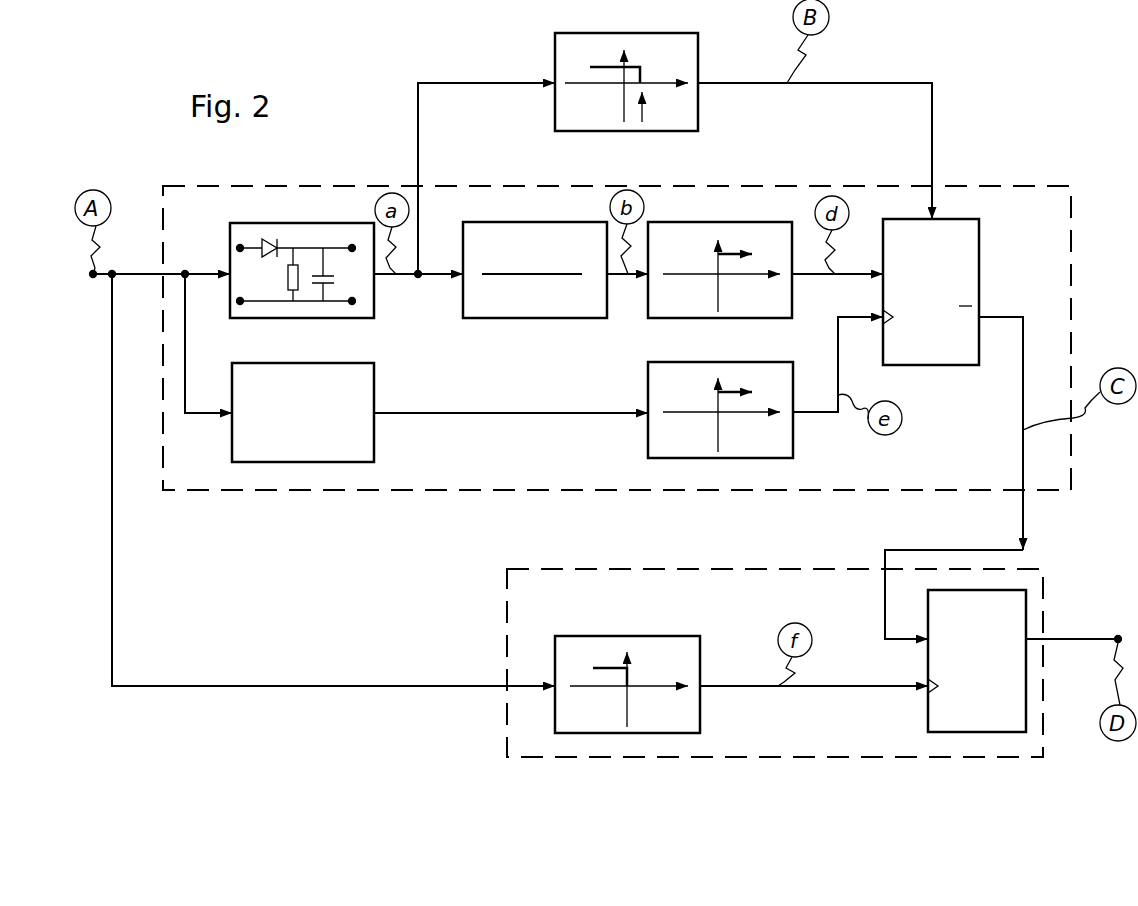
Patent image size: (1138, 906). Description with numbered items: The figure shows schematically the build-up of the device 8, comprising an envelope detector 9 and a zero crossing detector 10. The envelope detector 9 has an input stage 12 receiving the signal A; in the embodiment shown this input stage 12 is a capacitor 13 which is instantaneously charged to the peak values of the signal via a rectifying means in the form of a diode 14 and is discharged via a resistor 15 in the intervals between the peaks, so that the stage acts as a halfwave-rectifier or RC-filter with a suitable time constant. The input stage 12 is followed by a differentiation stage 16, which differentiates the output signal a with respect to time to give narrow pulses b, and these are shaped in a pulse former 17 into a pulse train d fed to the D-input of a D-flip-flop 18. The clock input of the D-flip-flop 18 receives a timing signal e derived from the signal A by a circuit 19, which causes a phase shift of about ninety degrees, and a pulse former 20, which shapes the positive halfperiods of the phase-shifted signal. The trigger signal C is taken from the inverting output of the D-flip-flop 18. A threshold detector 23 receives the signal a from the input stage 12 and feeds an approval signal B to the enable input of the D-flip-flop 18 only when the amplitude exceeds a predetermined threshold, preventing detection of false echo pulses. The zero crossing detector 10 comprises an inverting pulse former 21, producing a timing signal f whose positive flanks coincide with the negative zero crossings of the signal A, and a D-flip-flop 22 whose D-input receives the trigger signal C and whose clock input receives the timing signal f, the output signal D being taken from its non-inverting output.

The signal evaluation circuit 8 is at (390, 140).
The envelope detector 9 is at (220, 186).
The zero crossing detector 10 is at (507, 616).
The input stage 12 is at (302, 255).
The capacitor 13 is at (330, 286).
The diode 14 is at (268, 240).
The resistor 15 is at (288, 288).
The differentiation stage 16 is at (538, 318).
The pulse former 17 is at (770, 222).
The D-flip-flop 18 is at (979, 262).
The circuit 19 is at (374, 442).
The pulse former 20 is at (648, 444).
The inverting pulse former 21 is at (590, 636).
The D-flip-flop 22 is at (1026, 608).
The threshold detector 23 is at (555, 62).